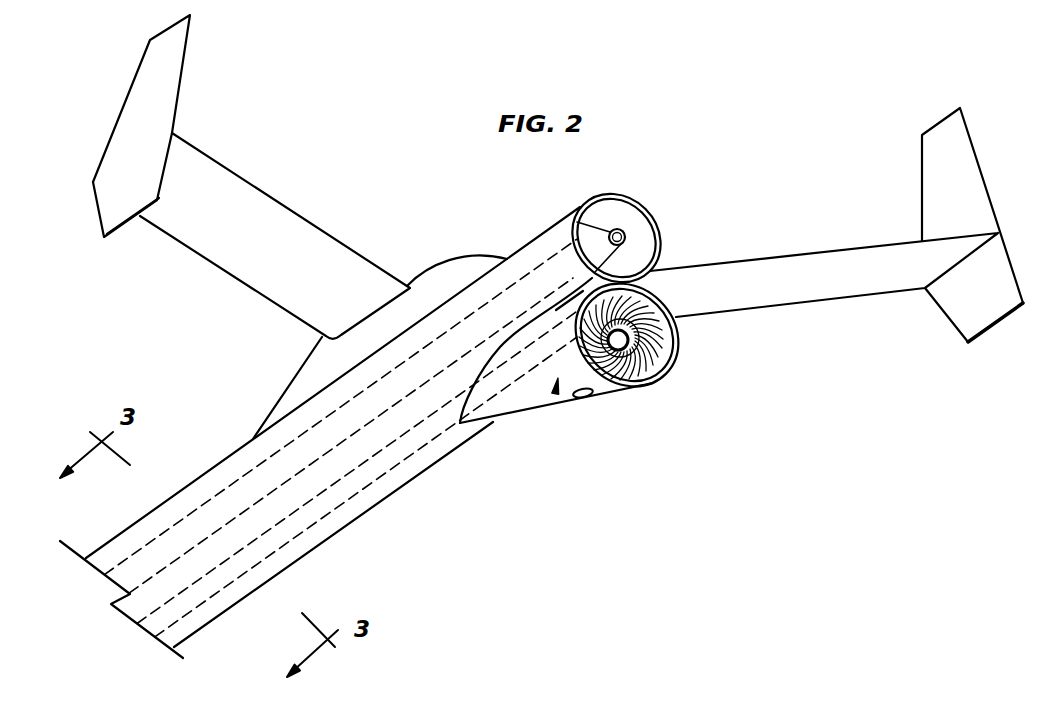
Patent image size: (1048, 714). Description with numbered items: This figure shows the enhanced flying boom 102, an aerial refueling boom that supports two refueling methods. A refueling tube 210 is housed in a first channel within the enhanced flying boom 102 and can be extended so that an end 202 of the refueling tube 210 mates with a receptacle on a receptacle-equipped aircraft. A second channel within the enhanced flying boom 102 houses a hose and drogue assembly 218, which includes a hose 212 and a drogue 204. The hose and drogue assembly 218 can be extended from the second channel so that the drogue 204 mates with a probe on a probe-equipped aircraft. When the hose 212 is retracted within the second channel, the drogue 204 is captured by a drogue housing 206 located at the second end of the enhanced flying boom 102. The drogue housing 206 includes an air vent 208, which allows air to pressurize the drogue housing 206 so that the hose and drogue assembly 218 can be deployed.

The enhanced flying boom 102 is at (401, 176).
The end of refueling tube 202 is at (619, 228).
The drogue 204 is at (650, 361).
The drogue housing 206 is at (603, 394).
The air vent 208 is at (585, 398).
The refueling tube 210 is at (477, 327).
The hose 212 is at (403, 448).
The hose and drogue assembly 218 is at (555, 392).